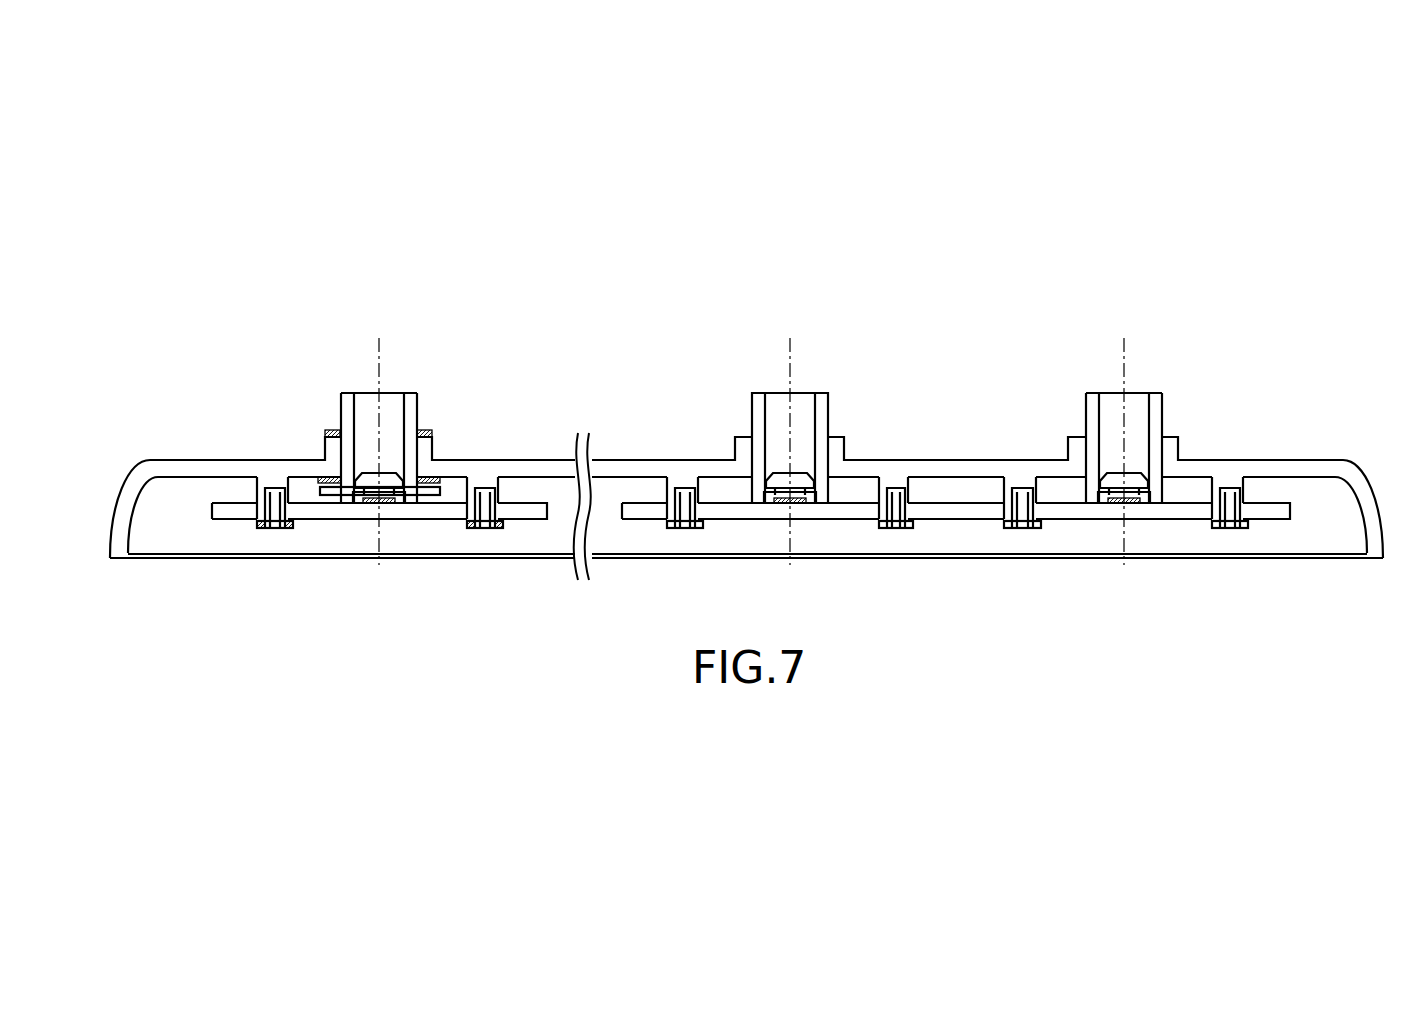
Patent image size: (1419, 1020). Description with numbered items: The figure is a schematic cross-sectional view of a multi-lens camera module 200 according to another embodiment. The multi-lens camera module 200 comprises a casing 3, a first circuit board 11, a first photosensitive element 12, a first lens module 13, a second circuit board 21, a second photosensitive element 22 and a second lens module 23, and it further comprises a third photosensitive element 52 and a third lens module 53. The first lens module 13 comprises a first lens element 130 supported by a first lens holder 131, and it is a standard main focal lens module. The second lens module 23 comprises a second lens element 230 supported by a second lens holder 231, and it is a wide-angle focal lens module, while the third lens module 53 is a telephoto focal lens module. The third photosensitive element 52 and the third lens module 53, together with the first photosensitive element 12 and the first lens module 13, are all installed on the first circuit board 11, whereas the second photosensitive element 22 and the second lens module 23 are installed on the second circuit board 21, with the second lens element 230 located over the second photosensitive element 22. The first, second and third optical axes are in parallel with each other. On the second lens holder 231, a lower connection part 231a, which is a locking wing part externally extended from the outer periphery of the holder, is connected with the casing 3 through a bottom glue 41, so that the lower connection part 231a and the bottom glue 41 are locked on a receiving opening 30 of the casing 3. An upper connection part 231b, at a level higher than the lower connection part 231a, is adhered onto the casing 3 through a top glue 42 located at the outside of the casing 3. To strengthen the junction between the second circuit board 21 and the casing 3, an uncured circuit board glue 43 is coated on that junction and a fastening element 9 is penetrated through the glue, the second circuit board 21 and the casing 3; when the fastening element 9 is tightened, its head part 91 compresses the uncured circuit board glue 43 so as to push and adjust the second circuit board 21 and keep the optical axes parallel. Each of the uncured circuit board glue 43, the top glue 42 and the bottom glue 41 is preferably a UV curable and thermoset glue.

The multi-lens camera module 200 is at (276, 278).
The casing 3 is at (1283, 468).
The first circuit board 11 is at (1270, 510).
The second circuit board 21 is at (397, 512).
The uncured circuit board glue 43 is at (257, 522).
The fastening element 9 is at (280, 530).
The head part 91 is at (296, 524).
The second lens module 23 is at (165, 387).
The second lens element 230 is at (385, 477).
The second lens holder 231 is at (348, 393).
The lower connection part 231a is at (440, 490).
The upper connection part 231b is at (343, 425).
The receiving opening 30 is at (392, 398).
The second photosensitive element 22 is at (378, 502).
The top glue 42 is at (325, 430).
The bottom glue 41 is at (430, 477).
The third lens module 53 is at (802, 408).
The third photosensitive element 52 is at (775, 502).
The first lens module 13 is at (1137, 407).
The first lens holder 131 is at (1092, 423).
The first lens element 130 is at (1130, 480).
The first photosensitive element 12 is at (1108, 502).